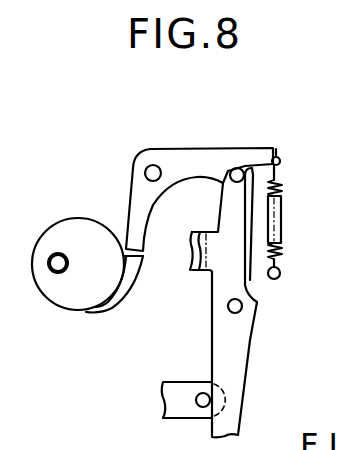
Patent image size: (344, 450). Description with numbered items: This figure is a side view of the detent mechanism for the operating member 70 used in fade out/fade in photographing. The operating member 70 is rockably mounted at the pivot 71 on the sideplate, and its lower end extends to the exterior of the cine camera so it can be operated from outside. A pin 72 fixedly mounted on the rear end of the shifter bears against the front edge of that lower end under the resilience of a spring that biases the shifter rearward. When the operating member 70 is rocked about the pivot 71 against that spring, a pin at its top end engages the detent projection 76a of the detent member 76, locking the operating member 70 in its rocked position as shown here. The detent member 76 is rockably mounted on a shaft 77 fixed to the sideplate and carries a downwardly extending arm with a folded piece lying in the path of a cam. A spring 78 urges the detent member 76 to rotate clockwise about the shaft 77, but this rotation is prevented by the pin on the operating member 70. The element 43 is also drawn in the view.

The wheel 43 is at (53, 254).
The operating member 70 is at (250, 347).
The pivot 71 is at (243, 306).
The pin 72 is at (200, 393).
The detent member 76 is at (184, 157).
The detent projection 76a is at (228, 170).
The shaft 77 is at (147, 165).
The spring 78 is at (282, 217).